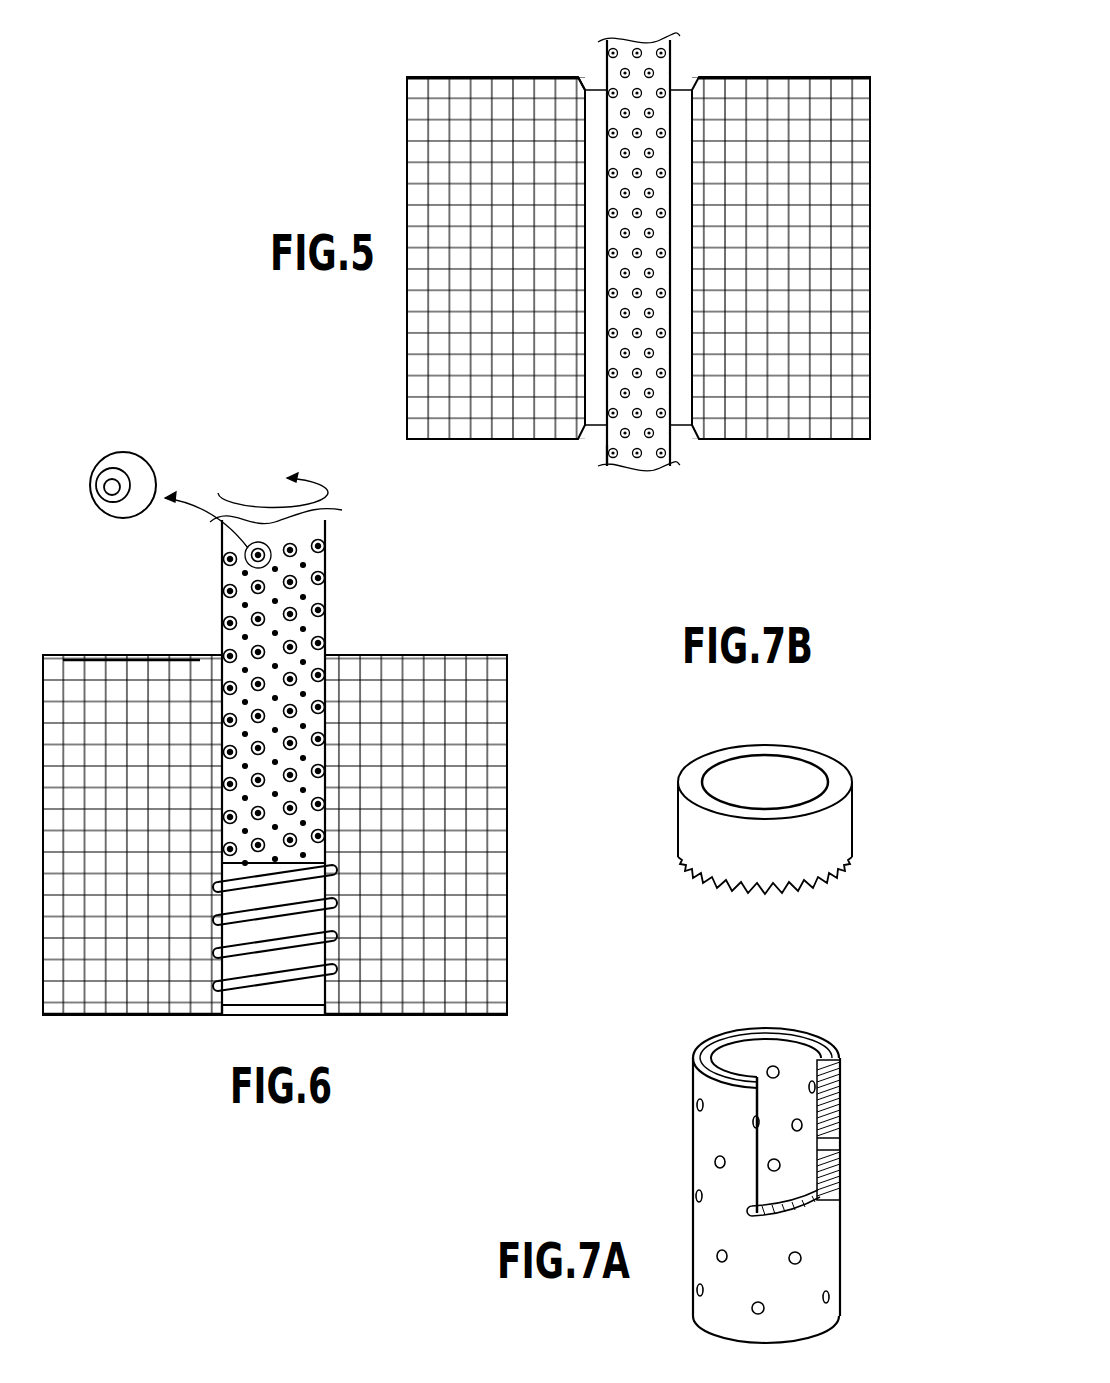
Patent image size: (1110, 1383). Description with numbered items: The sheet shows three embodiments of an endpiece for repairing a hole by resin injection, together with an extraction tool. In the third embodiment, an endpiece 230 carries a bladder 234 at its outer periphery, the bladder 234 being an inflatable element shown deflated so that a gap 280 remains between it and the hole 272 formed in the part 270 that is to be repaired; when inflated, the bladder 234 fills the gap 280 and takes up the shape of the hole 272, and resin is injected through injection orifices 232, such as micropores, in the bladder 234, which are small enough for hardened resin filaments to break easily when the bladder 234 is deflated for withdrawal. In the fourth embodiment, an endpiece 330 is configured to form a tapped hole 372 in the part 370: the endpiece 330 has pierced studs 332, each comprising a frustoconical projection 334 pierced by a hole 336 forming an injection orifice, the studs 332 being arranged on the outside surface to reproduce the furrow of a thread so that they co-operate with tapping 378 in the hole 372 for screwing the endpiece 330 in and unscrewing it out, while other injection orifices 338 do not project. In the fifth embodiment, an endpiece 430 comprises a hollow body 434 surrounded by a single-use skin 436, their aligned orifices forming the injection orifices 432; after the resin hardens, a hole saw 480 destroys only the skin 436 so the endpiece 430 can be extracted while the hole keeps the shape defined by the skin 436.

In FIG. 5, the endpiece 230 is at (644, 289).
In FIG. 5, the injection orifices 232 is at (676, 50).
In FIG. 5, the bladder 234 is at (605, 447).
In FIG. 5, the bone 270 is at (410, 139).
In FIG. 5, the hole 272 is at (688, 225).
In FIG. 5, the gap 280 is at (598, 115).
In FIG. 6, the endpiece 330 is at (224, 744).
In FIG. 6, the pierced studs 332 is at (224, 647).
In FIG. 6, the projection 334 is at (117, 461).
In FIG. 6, the hole 336 is at (104, 491).
In FIG. 6, the injection orifices 338 is at (305, 565).
In FIG. 6, the bone 370 is at (490, 683).
In FIG. 6, the tapped hole 372 is at (232, 1012).
In FIG. 6, the tapping 378 is at (325, 871).
In FIG. 7A, the endpiece 430 is at (757, 1166).
In FIG. 7A, the injection orifices 432 is at (812, 1214).
In FIG. 7A, the hollow body 434 is at (796, 1030).
In FIG. 7A, the skin 436 is at (718, 1034).
In FIG. 7B, the hole saw 480 is at (778, 890).